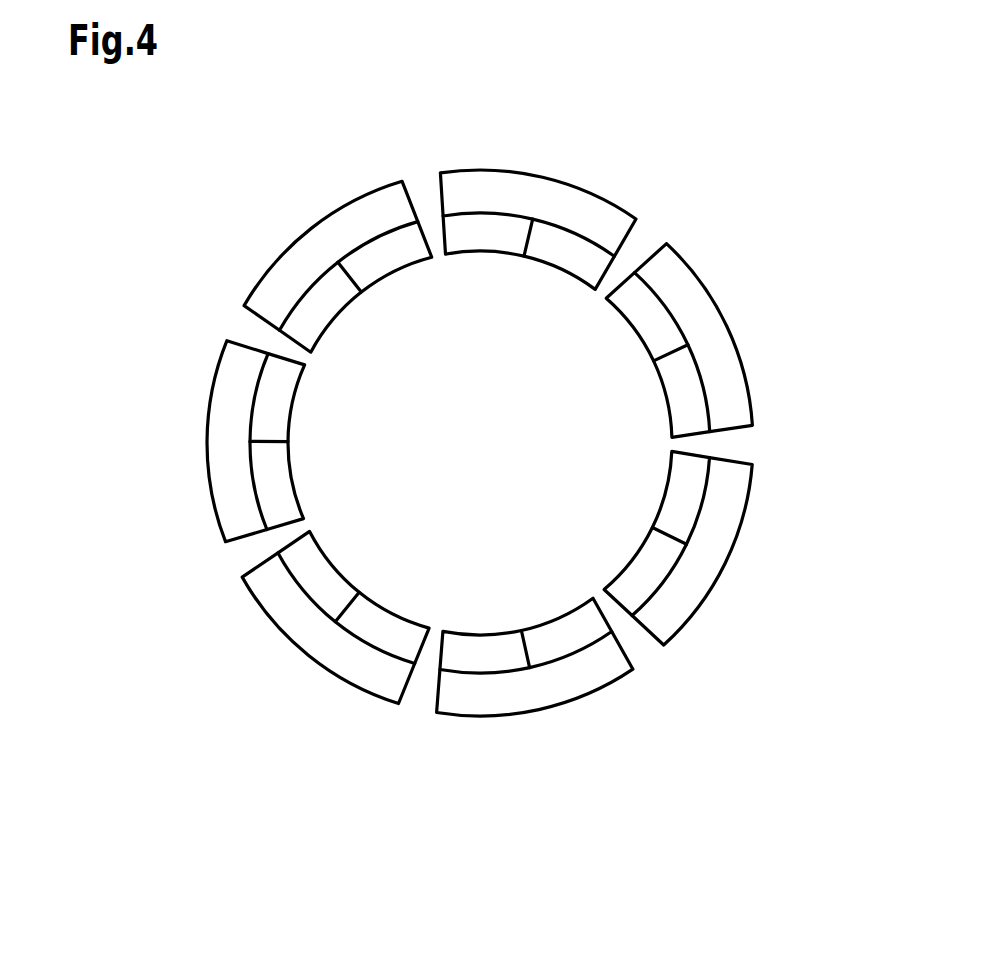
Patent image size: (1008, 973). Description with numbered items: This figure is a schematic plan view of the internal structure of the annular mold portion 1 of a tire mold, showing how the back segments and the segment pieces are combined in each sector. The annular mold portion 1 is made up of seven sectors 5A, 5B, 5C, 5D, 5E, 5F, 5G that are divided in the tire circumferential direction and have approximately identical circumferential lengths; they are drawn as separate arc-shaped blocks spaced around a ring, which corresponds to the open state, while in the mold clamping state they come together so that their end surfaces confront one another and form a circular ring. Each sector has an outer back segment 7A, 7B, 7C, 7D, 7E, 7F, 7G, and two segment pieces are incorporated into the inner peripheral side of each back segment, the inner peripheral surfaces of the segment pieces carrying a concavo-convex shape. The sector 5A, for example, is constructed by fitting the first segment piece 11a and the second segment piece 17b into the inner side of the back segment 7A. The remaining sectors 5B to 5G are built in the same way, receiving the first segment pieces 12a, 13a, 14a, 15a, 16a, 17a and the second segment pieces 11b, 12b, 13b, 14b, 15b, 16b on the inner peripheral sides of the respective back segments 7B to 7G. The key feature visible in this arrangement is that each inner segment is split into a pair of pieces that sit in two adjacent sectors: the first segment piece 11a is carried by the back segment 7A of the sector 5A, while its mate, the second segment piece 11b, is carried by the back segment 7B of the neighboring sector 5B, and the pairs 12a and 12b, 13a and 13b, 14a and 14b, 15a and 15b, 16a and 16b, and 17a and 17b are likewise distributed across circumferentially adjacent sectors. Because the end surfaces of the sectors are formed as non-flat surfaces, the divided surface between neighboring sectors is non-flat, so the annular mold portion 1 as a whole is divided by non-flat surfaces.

The annular mold portion 1 is at (467, 445).
The sector 5A is at (334, 245).
The sector 5B is at (539, 218).
The sector 5C is at (696, 341).
The sector 5D is at (693, 538).
The sector 5E is at (541, 665).
The sector 5F is at (320, 632).
The sector 5G is at (251, 441).
The back segment 7A is at (280, 272).
The back segment 7B is at (491, 185).
The back segment 7C is at (690, 288).
The back segment 7D is at (737, 503).
The back segment 7E is at (602, 677).
The back segment 7F is at (375, 678).
The back segment 7G is at (227, 503).
The first segment piece 11a is at (395, 267).
The second segment piece 11b is at (483, 250).
The first segment piece 12a is at (572, 268).
The second segment piece 12b is at (642, 325).
The first segment piece 13a is at (668, 397).
The second segment piece 13b is at (677, 480).
The first segment piece 14a is at (640, 560).
The second segment piece 14b is at (575, 617).
The first segment piece 15a is at (473, 638).
The second segment piece 15b is at (393, 615).
The first segment piece 16a is at (323, 550).
The second segment piece 16b is at (293, 480).
The first segment piece 17a is at (292, 395).
The second segment piece 17b is at (323, 323).